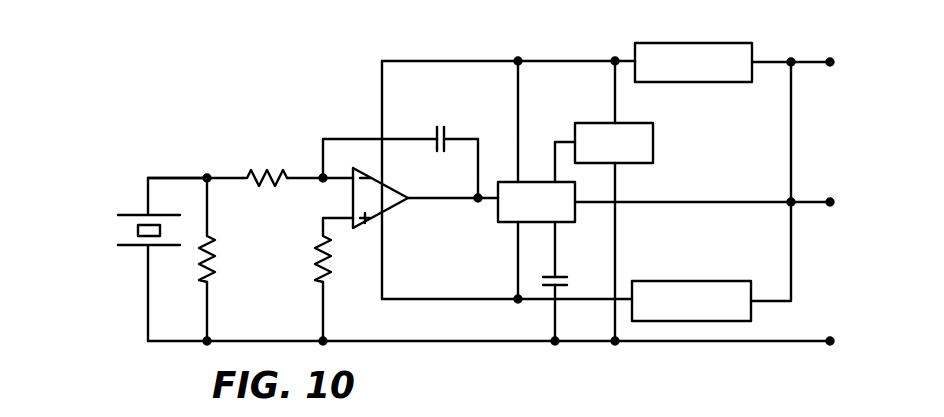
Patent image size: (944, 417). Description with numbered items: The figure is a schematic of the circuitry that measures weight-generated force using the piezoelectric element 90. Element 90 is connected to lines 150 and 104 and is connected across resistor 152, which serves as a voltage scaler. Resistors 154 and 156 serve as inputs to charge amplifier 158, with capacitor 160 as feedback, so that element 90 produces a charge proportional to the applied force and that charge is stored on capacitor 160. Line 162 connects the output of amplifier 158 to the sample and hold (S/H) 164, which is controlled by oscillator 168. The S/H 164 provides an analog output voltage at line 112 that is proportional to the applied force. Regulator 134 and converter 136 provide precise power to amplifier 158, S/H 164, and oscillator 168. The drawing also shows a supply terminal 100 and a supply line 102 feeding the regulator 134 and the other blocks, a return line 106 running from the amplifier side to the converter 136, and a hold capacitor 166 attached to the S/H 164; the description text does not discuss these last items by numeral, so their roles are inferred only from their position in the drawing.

The piezoelectric element 90 is at (135, 247).
The power supply terminal 100 is at (808, 62).
The supply line 102 is at (555, 60).
The line 104 is at (796, 340).
The ground line 106 is at (404, 298).
The line 112 is at (810, 202).
The regulator 134 is at (678, 84).
The converter 136 is at (684, 281).
The line 150 is at (172, 177).
The resistor 152 is at (216, 258).
The resistor 154 is at (259, 170).
The resistor 156 is at (322, 238).
The charge amplifier 158 is at (388, 190).
The capacitor 160 is at (434, 131).
The line 162 is at (478, 126).
The sample and hold 164 is at (496, 212).
The hold capacitor 166 is at (548, 290).
The oscillator 168 is at (655, 150).